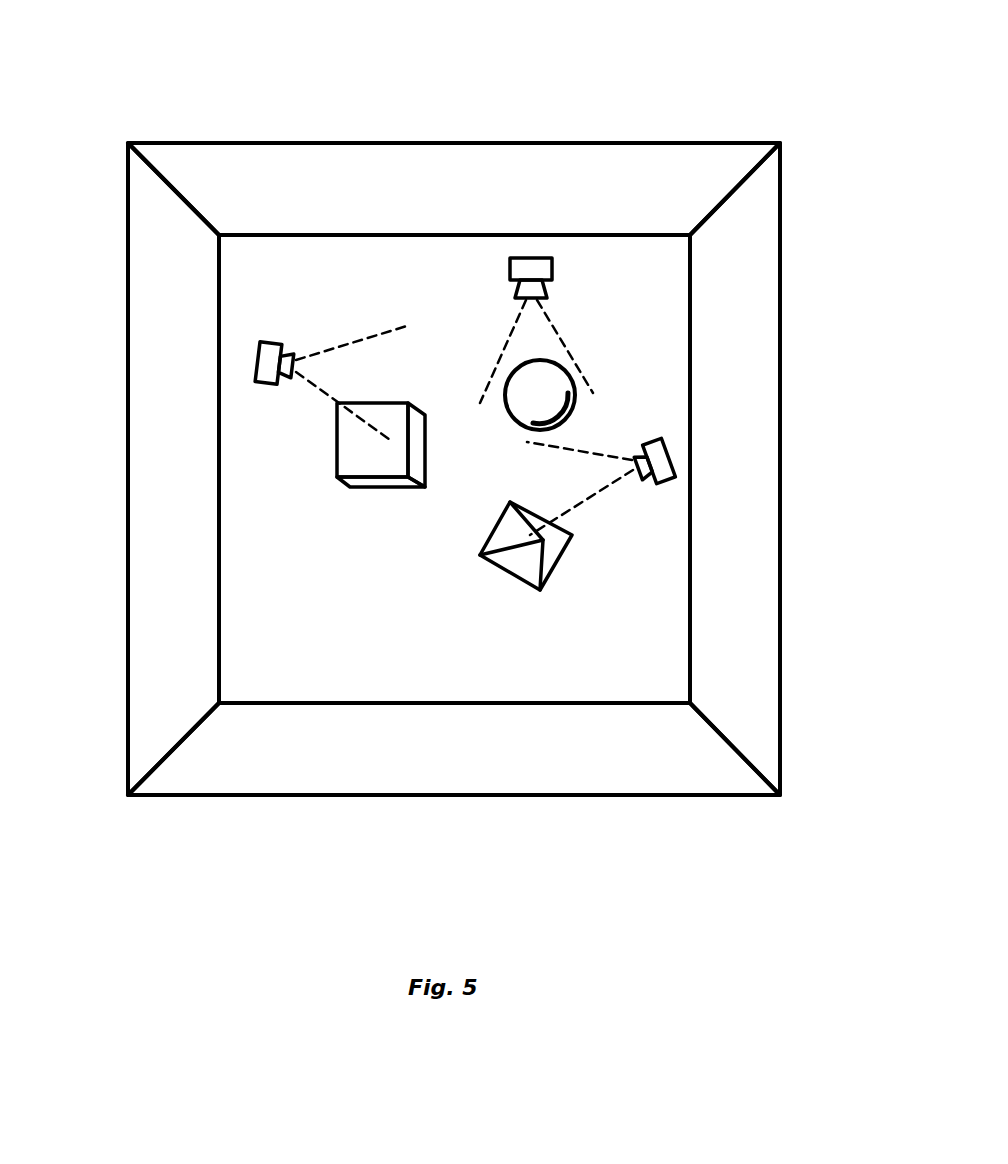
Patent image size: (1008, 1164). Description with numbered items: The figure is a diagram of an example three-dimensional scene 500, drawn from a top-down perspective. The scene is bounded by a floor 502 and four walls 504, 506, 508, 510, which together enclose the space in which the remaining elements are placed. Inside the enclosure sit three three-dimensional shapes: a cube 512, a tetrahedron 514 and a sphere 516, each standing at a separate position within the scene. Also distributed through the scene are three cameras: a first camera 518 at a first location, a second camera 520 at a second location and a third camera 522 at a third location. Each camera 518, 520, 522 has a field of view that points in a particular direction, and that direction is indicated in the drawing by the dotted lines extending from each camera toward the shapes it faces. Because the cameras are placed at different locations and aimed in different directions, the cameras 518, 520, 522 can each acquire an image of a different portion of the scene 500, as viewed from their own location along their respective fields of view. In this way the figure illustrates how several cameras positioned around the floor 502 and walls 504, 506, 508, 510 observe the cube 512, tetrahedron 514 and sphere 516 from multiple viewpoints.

The 3D scene 500 is at (482, 42).
The floor 502 is at (405, 703).
The wall 504 is at (455, 795).
The wall 506 is at (780, 615).
The wall 508 is at (455, 143).
The wall 510 is at (128, 615).
The cube 512 is at (390, 487).
The tetrahedron 514 is at (507, 577).
The sphere 516 is at (560, 425).
The first camera 518 is at (267, 382).
The second camera 520 is at (531, 258).
The third camera 522 is at (675, 463).